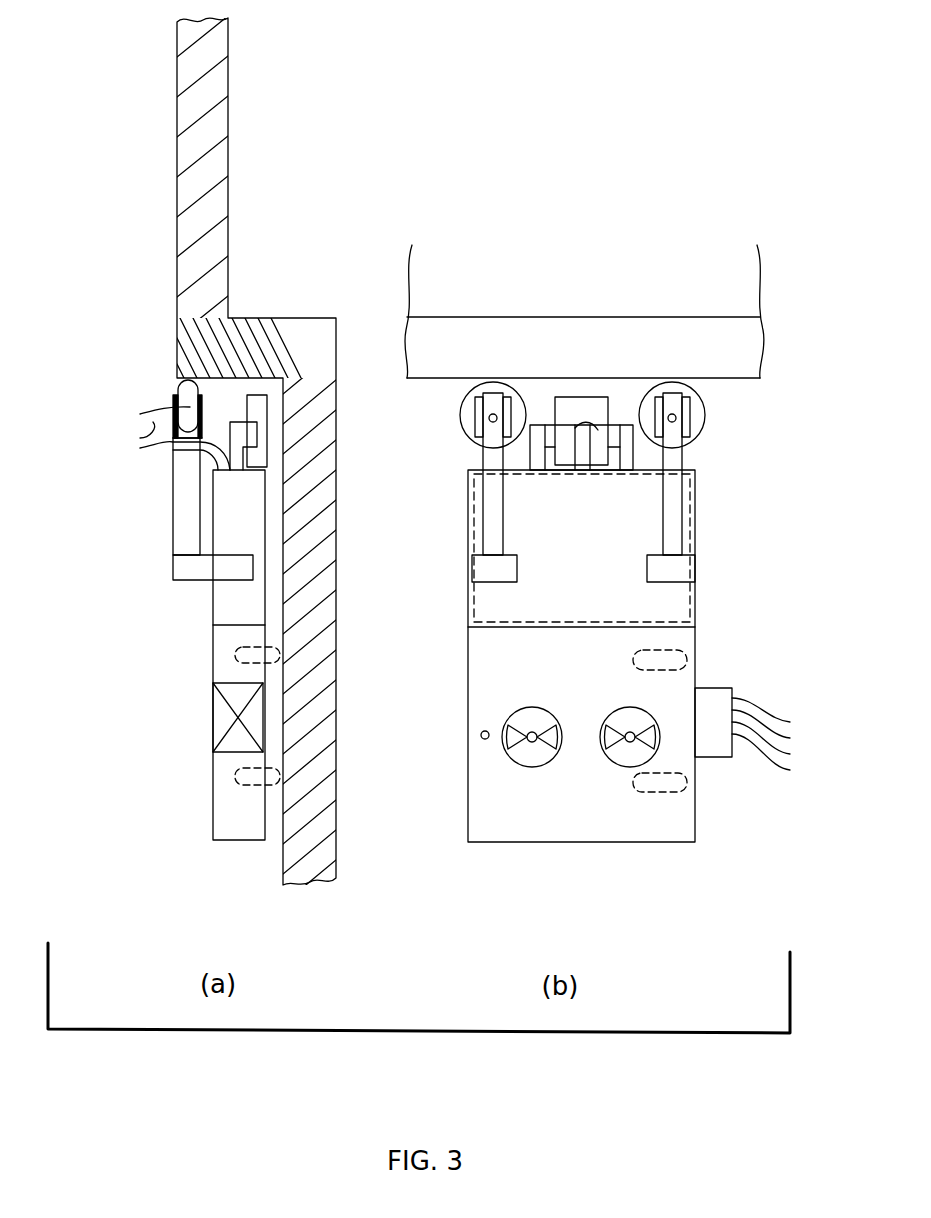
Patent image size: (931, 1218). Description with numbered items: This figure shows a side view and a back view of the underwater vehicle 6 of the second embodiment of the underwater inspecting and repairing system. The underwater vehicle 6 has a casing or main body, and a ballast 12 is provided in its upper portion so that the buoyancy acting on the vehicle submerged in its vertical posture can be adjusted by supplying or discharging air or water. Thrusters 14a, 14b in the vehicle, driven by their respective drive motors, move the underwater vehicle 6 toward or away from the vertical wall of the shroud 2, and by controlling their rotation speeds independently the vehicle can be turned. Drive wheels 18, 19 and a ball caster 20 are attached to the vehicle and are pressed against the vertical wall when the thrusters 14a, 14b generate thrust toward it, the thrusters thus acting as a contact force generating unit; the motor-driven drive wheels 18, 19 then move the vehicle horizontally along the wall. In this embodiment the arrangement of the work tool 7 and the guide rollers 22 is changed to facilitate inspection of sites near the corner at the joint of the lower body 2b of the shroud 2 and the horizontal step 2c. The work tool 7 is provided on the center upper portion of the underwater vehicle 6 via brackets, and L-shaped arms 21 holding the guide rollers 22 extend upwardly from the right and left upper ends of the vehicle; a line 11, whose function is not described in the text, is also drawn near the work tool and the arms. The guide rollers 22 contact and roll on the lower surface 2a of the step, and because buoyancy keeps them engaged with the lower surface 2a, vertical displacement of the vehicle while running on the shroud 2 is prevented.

The shroud 2 is at (213, 115).
The lower surface 2a is at (230, 382).
The lower body 2b is at (330, 714).
The horizontal step 2c is at (185, 343).
The underwater vehicle 6 is at (142, 570).
The work tool 7 is at (260, 395).
The cable 11 is at (160, 447).
The ballast 12 is at (228, 603).
The thruster 14a is at (530, 757).
The thruster 14b is at (213, 713).
The drive wheel 18 is at (233, 648).
The drive wheel 19 is at (235, 770).
The ball caster 20 is at (482, 742).
The L-shaped arm 21 is at (187, 513).
The guide roller 22 is at (185, 410).